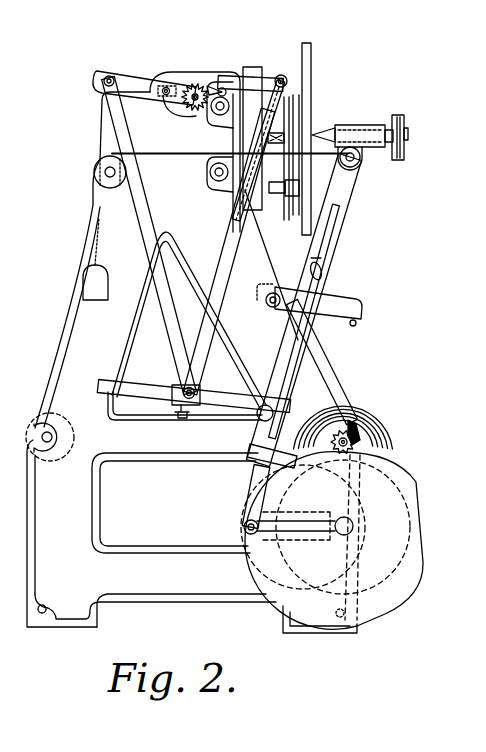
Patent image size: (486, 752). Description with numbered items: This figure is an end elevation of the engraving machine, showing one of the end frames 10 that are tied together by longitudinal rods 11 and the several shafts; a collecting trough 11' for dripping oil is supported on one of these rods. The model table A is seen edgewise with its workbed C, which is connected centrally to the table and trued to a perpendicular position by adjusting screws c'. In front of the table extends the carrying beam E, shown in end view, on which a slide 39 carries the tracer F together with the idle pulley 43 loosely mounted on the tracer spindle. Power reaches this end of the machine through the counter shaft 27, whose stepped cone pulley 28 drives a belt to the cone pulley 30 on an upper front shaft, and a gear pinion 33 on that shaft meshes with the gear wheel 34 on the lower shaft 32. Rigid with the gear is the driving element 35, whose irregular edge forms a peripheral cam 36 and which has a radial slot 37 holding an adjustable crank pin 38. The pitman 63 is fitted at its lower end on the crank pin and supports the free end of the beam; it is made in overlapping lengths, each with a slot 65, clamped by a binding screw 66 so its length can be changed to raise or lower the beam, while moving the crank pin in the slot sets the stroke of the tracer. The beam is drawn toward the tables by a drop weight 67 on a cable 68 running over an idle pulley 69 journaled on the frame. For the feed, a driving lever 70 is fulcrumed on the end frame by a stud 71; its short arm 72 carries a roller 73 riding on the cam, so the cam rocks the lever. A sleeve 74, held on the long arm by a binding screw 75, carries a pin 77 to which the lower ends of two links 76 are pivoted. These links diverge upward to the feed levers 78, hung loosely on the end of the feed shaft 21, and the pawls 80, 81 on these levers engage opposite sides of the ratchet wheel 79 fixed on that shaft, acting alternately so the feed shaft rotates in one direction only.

The end frame 10 is at (93, 516).
The longitudinal rod 11 is at (271, 267).
The arm 11' is at (317, 292).
The feed shaft 21 is at (193, 103).
The longitudinal shaft 27 is at (52, 437).
The stepped cone pulley 28 is at (36, 425).
The cone pulley 30 is at (388, 420).
The shaft 32 is at (354, 526).
The gear pinion 33 is at (360, 449).
The gear wheel 34 is at (424, 528).
The driving element 35 is at (424, 560).
The peripheral cam 36 is at (380, 612).
The radial slot 37 is at (315, 533).
The crank pin 38 is at (244, 526).
The slide 39 is at (366, 124).
The idle pulley 43 is at (408, 150).
The pitman 63 is at (326, 237).
The slot 65 is at (338, 233).
The binding screw 66 is at (323, 276).
The drop weight 67 is at (81, 278).
The cable 68 is at (175, 152).
The idle pulley 69 is at (93, 172).
The driving lever 70 is at (224, 401).
The stud 71 is at (269, 404).
The short arm 72 is at (355, 412).
The roller 73 is at (332, 442).
The sleeve 74 is at (178, 385).
The binding screw 75 is at (181, 418).
The links 76 is at (160, 297).
The pin 77 is at (200, 395).
The feed levers 78 is at (148, 78).
The ratchet wheel 79 is at (197, 83).
The pawl 80 is at (226, 78).
The pawl 81 is at (183, 105).
The model table A is at (254, 66).
The workbed C is at (312, 64).
The adjusting screws c' is at (300, 163).
The carrying beam E is at (361, 166).
The tracer F is at (322, 133).